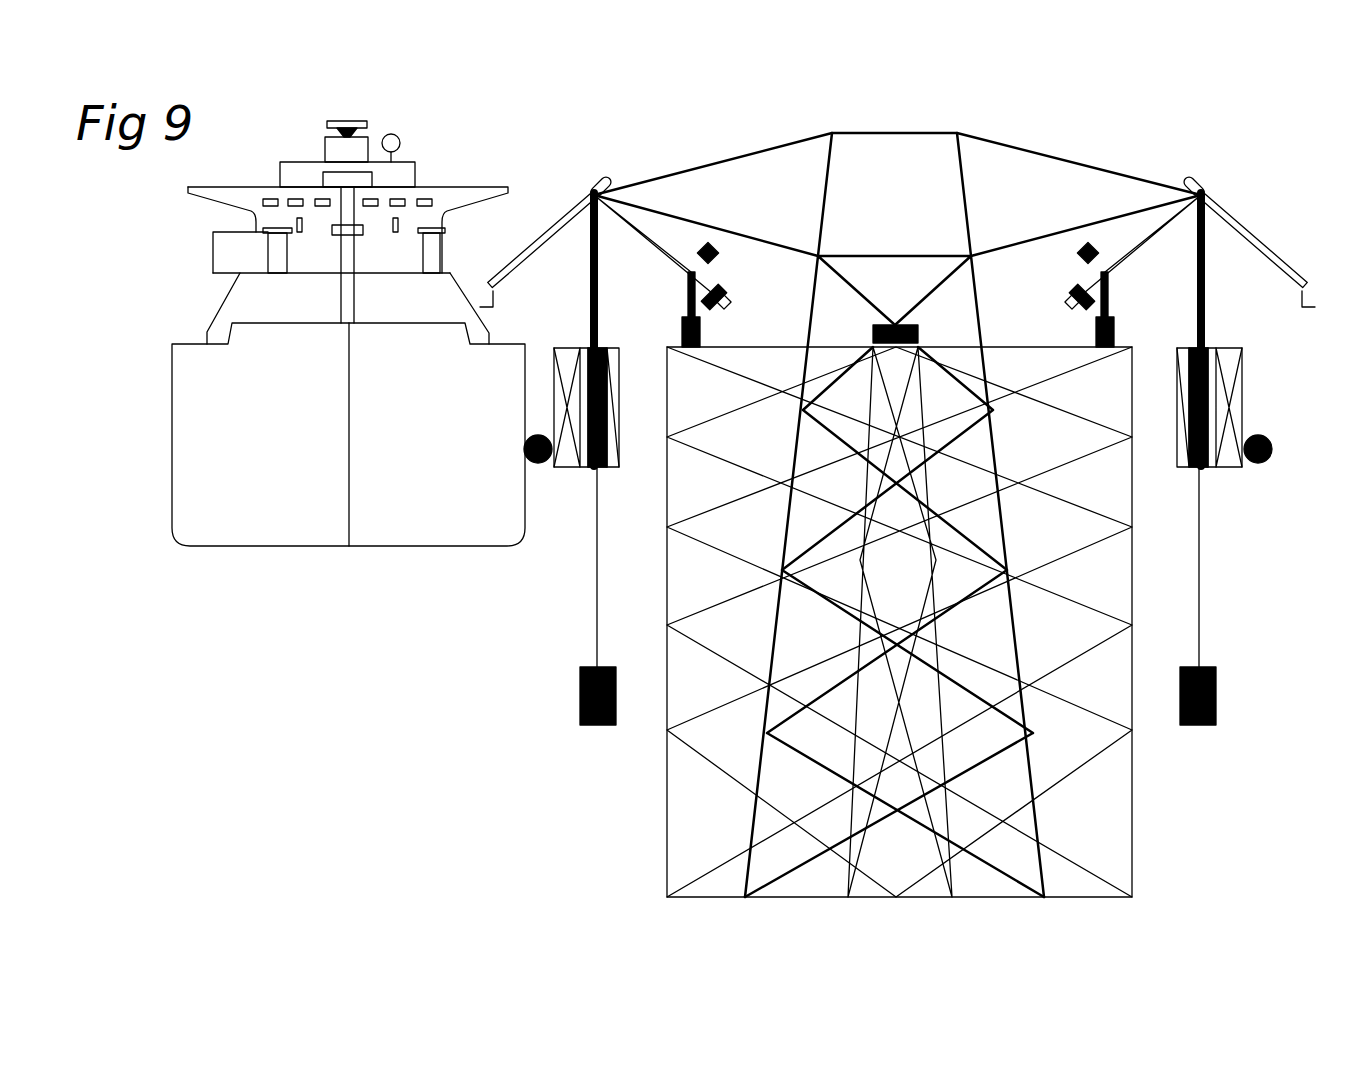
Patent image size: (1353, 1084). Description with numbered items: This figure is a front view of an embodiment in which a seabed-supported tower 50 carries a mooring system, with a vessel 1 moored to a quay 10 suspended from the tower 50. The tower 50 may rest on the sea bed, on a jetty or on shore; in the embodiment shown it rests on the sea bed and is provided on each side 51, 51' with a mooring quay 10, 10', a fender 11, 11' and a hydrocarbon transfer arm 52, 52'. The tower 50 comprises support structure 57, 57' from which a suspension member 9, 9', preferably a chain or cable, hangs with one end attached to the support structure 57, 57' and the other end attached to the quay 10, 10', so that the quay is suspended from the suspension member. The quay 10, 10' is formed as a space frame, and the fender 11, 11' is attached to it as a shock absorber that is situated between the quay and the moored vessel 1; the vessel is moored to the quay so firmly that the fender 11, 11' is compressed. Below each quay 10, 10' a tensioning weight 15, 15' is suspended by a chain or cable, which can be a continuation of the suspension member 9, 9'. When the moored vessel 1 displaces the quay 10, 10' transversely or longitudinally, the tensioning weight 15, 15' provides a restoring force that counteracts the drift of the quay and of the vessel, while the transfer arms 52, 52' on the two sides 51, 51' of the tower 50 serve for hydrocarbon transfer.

The vessel 1 is at (272, 522).
The suspension member 9 is at (569, 329).
The suspension member 9' is at (1231, 329).
The quay 10 is at (598, 507).
The quay 10' is at (1217, 507).
The fender 11 is at (540, 488).
The fender 11' is at (1283, 433).
The tensioning weight 15 is at (559, 696).
The tensioning weight 15' is at (1237, 696).
The tower 50 is at (1007, 850).
The side of the tower 51 is at (650, 193).
The side of the tower 51' is at (1145, 194).
The hydrocarbon transfer arm 52 is at (538, 228).
The hydrocarbon transfer arm 52' is at (1257, 244).
The support structure 57 is at (713, 183).
The support structure 57' is at (1079, 183).